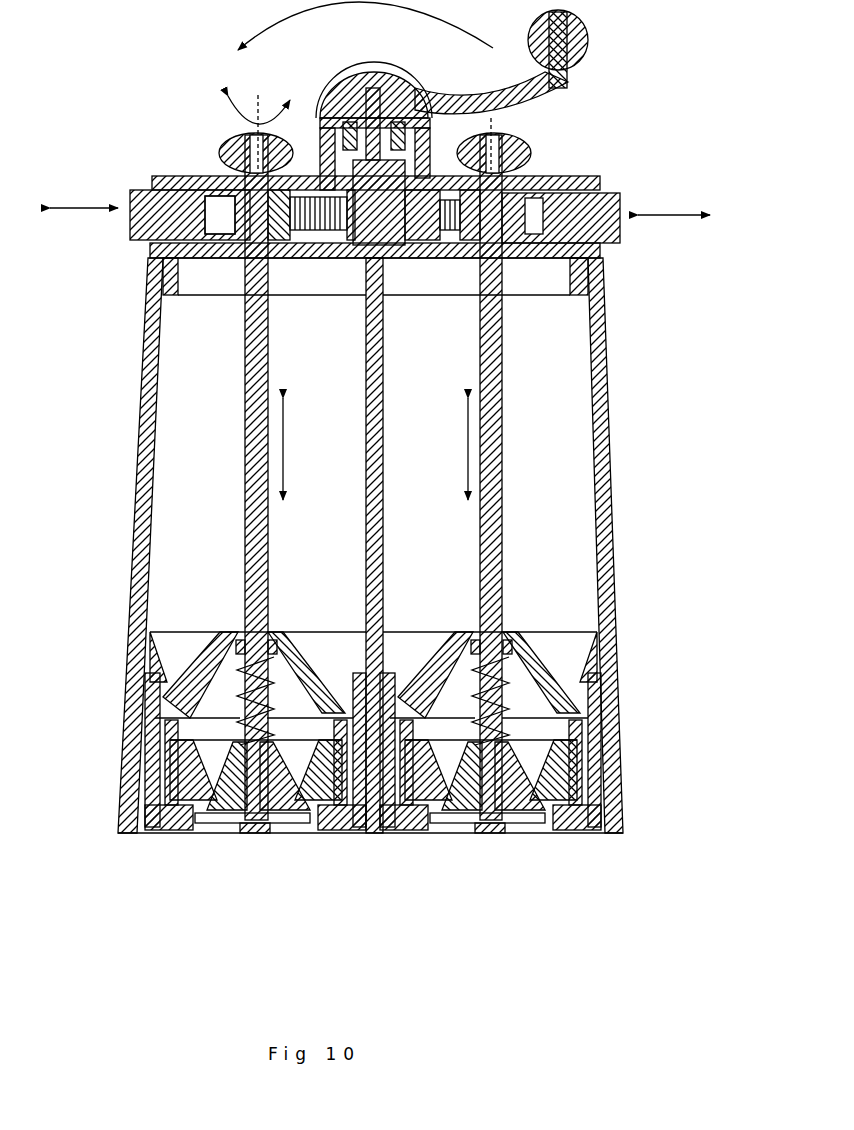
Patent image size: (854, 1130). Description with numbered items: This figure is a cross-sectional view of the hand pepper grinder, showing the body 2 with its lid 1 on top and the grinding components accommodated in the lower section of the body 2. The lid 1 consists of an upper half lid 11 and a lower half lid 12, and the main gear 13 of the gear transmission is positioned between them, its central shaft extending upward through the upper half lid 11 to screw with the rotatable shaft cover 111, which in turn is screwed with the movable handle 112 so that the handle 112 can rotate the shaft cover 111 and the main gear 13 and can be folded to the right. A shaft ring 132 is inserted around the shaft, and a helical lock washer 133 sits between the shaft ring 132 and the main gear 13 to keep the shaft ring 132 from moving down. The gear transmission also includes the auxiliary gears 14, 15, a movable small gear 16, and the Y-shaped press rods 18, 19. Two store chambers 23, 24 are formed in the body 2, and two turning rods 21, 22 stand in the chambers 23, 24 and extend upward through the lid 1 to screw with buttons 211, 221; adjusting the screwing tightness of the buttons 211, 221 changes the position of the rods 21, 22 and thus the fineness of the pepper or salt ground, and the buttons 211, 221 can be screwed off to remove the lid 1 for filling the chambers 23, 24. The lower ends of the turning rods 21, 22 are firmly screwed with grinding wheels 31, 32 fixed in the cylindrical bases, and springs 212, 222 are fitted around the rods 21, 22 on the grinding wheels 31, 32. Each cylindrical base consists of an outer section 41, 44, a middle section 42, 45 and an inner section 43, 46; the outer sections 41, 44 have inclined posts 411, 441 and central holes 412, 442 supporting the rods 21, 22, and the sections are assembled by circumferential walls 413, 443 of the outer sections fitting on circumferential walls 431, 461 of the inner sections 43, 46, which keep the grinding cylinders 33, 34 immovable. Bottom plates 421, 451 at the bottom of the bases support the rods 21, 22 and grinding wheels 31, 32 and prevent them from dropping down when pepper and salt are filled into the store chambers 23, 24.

The lid 1 is at (535, 173).
The body 2 is at (615, 490).
The upper half lid 11 is at (573, 187).
The lower half lid 12 is at (600, 258).
The main gear 13 is at (408, 180).
The auxiliary gear 14 is at (200, 176).
The auxiliary gear 15 is at (452, 260).
The movable small gear 16 is at (313, 262).
The Y-shaped press rod 18 is at (137, 220).
The Y-shaped press rod 19 is at (615, 228).
The turning rod 21 is at (245, 375).
The turning rod 22 is at (480, 377).
The store chamber 23 is at (168, 395).
The store chamber 24 is at (573, 408).
The grinding wheel 31 is at (280, 825).
The grinding wheel 32 is at (525, 828).
The grinding cylinder 33 is at (330, 828).
The grinding cylinder 34 is at (410, 828).
The outer section of cylindrical base 41 is at (140, 698).
The middle section of cylindrical base 42 is at (153, 758).
The inner section of cylindrical base 43 is at (158, 790).
The outer section of cylindrical base 44 is at (603, 712).
The middle section of cylindrical base 45 is at (583, 757).
The inner section of cylindrical base 46 is at (577, 793).
The shaft cover 111 is at (333, 77).
The handle 112 is at (520, 90).
The shaft ring 132 is at (393, 120).
The helical lock washer 133 is at (320, 110).
The button 211 is at (248, 144).
The spring 212 is at (239, 701).
The button 221 is at (527, 147).
The spring 222 is at (474, 701).
The inclined post 411 is at (197, 660).
The central hole 412 is at (243, 670).
The circumferential wall 413 is at (135, 692).
The bottom plate 421 is at (220, 833).
The circumferential wall 431 is at (153, 720).
The inclined post 441 is at (422, 673).
The central hole 442 is at (477, 645).
The circumferential wall 443 is at (615, 705).
The bottom plate 451 is at (452, 833).
The circumferential wall 461 is at (590, 727).